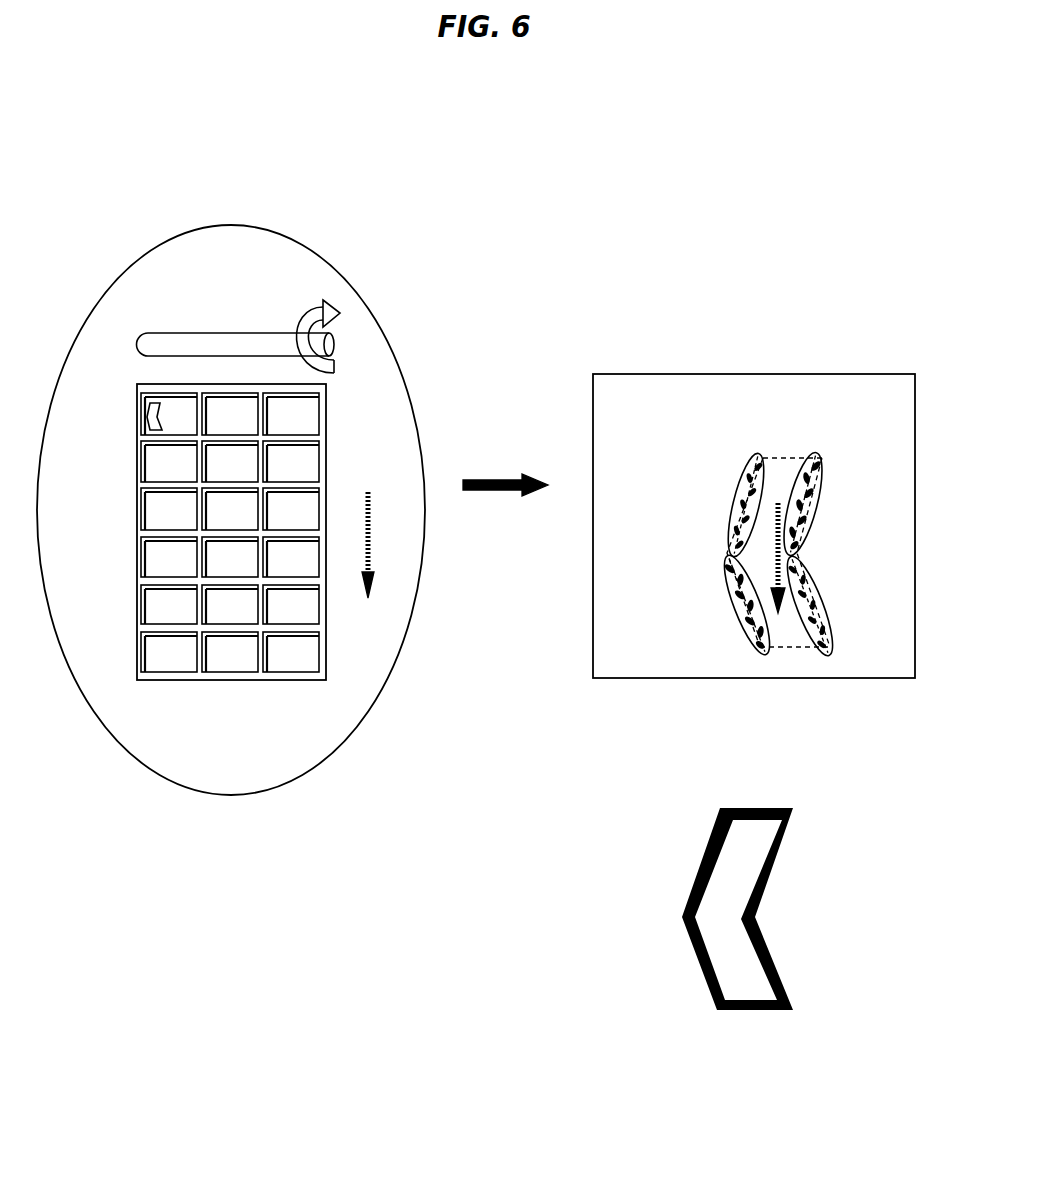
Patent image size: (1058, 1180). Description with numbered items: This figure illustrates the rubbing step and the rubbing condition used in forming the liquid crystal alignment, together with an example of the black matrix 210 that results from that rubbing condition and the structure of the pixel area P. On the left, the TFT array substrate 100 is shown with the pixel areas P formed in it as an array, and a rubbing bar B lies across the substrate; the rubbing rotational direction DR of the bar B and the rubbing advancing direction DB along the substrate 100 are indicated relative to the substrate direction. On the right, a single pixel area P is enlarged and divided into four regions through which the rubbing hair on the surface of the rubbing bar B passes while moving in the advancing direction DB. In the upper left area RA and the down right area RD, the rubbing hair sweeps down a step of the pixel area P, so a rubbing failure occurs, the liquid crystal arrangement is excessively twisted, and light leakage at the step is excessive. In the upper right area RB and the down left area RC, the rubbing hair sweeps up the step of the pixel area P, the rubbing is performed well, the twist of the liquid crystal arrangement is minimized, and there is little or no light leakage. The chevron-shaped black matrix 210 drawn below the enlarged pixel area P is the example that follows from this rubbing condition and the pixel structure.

The rubbing bar B is at (221, 333).
The rubbing rotational direction DR is at (318, 325).
The rubbing advancing direction DB is at (573, 536).
The TFT array substrate 100 is at (232, 680).
The pixel area P is at (790, 458).
The upper left area RA is at (737, 502).
The upper right area RB is at (820, 502).
The down left area RC is at (738, 615).
The down right area RD is at (822, 605).
The black matrix 210 is at (722, 793).